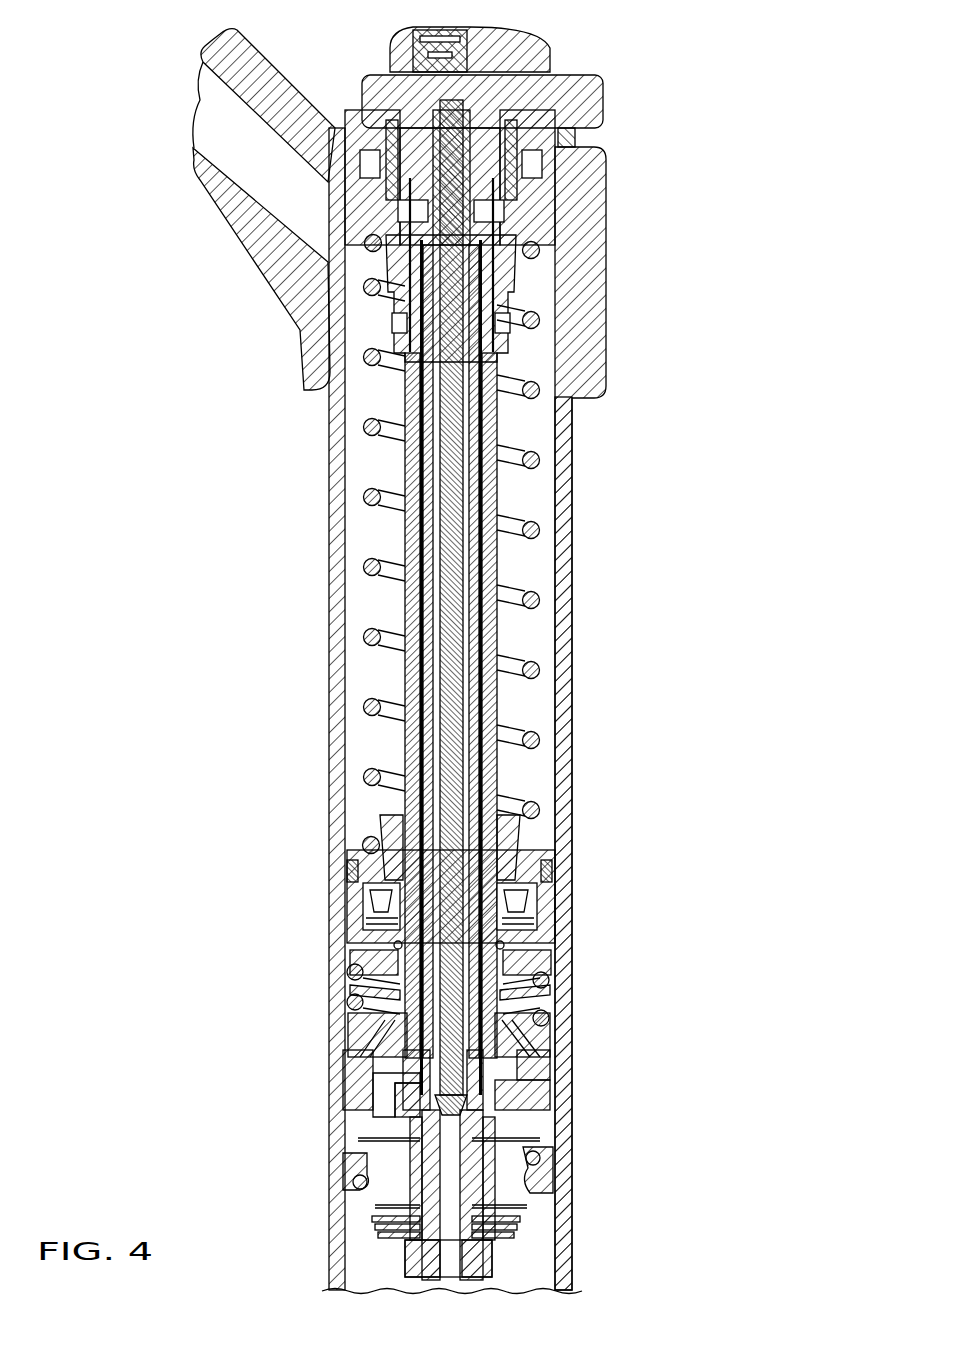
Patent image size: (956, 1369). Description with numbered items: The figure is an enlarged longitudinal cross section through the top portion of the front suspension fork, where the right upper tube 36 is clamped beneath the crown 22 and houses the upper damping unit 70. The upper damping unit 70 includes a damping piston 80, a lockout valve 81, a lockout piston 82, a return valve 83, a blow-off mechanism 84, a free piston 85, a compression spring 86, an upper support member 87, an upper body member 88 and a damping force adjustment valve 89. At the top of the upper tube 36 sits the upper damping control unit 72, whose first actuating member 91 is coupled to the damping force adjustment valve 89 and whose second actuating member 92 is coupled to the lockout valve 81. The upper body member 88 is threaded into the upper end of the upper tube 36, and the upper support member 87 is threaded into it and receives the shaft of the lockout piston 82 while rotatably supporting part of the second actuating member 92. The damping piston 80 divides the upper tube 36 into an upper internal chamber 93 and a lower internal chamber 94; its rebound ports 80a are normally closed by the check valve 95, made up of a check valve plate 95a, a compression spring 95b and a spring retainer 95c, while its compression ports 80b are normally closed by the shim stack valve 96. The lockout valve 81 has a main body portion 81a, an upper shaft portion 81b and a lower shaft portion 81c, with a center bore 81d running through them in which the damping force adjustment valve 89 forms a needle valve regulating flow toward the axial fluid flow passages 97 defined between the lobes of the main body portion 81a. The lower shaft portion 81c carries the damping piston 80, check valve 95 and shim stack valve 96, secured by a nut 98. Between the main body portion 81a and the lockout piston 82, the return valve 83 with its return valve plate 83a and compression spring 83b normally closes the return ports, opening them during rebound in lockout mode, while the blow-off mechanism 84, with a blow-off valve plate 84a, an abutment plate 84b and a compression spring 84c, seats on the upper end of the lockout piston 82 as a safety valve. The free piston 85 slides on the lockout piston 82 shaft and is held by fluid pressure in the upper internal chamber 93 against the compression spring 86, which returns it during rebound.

The crown 22 is at (281, 57).
The right upper tube 36 is at (574, 625).
The upper damping unit 70 is at (328, 891).
The upper damping control unit 72 is at (540, 65).
The damping piston 80 is at (458, 1183).
The rebound ports 80a is at (352, 1191).
The compression ports 80b is at (545, 1146).
The lockout valve 81 is at (530, 1175).
The main body portion 81a is at (540, 1094).
The upper shaft portion 81b is at (530, 1062).
The lower shaft portion 81c is at (462, 1270).
The center bore 81d is at (443, 1268).
The lockout piston 82 is at (524, 1020).
The return valve 83 is at (298, 1077).
The return valve plate 83a is at (345, 1088).
The compression spring 83b is at (347, 1093).
The blow-off mechanism 84 is at (357, 979).
The blow-off valve plate 84a is at (347, 1033).
The abutment plate 84b is at (350, 957).
The compression spring 84c is at (348, 990).
The free piston 85 is at (560, 846).
The compression spring 86 is at (536, 740).
The upper support member 87 is at (532, 278).
The upper body member 88 is at (576, 137).
The damping force adjustment valve 89 is at (450, 509).
The first actuating member 91 is at (526, 27).
The second actuating member 92 is at (609, 78).
The upper internal chamber 93 is at (524, 997).
The lower internal chamber 94 is at (572, 1257).
The check valve 95 is at (353, 1264).
The check valve plate 95a is at (380, 1216).
The compression spring 95b is at (380, 1240).
The spring retainer 95c is at (383, 1222).
The shim stack valve 96 is at (372, 1138).
The axial fluid flow passages 97 is at (376, 1112).
The nut 98 is at (523, 1267).